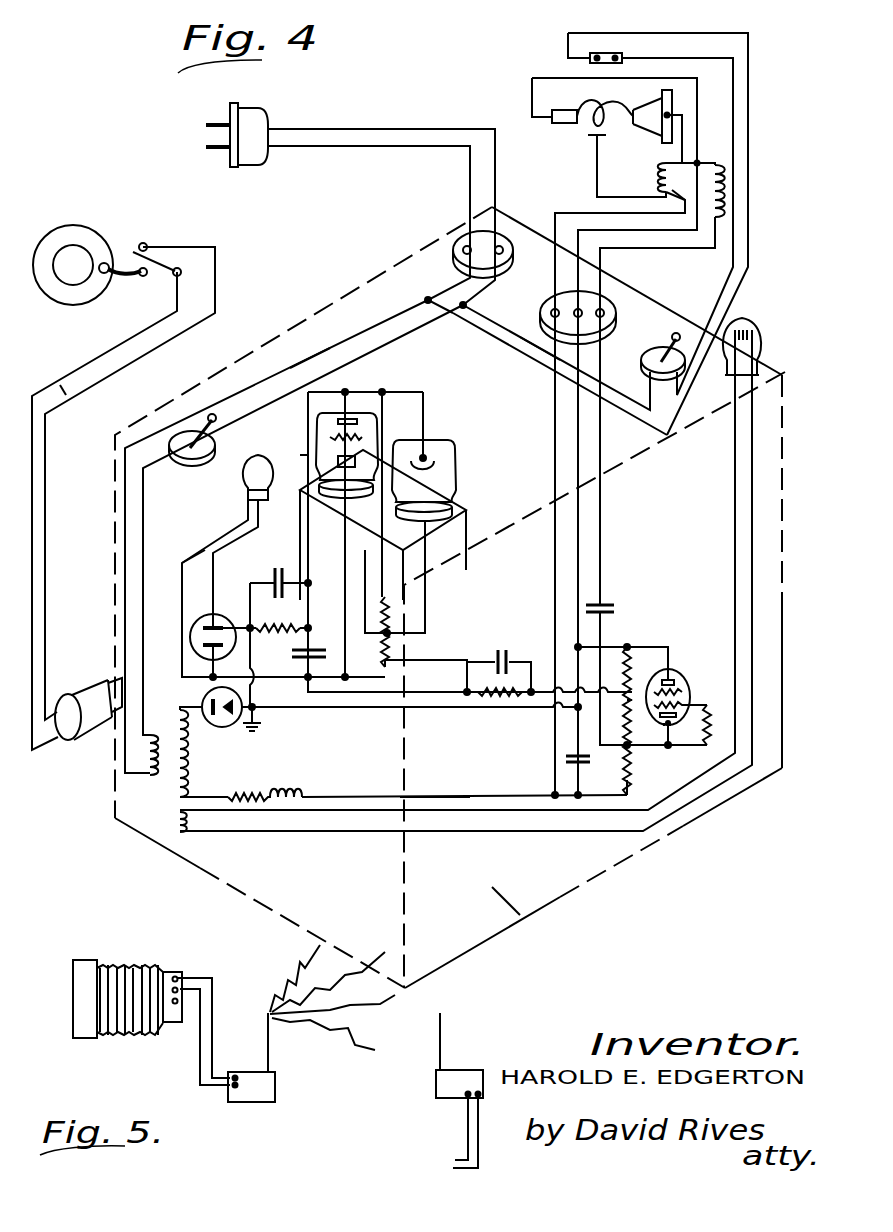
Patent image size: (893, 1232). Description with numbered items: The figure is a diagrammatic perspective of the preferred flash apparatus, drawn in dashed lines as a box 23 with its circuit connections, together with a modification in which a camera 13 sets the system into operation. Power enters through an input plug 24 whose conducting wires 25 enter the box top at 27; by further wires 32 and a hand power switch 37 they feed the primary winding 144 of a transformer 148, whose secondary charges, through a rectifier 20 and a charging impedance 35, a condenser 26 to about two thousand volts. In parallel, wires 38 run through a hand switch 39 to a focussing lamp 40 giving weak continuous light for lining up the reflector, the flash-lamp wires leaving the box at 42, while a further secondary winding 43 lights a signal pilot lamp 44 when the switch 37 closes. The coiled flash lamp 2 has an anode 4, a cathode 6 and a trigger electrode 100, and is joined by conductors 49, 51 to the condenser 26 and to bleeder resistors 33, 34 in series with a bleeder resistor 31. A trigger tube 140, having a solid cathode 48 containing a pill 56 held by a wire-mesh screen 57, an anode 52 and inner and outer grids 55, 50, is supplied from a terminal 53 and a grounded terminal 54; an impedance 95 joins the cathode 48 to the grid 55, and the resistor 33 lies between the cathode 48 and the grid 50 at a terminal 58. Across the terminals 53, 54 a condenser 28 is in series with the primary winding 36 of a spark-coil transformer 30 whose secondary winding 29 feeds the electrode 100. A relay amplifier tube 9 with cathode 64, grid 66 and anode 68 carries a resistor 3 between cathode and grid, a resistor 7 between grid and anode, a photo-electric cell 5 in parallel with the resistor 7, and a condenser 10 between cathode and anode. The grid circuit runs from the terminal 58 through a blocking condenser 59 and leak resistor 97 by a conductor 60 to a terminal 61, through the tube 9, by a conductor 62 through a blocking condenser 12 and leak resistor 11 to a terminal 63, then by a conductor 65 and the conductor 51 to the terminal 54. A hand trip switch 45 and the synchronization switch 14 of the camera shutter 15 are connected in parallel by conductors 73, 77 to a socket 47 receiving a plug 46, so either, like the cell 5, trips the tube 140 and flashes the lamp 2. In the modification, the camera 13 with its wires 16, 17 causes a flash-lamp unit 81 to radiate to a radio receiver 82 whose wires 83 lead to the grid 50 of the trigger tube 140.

In FIG. 4, the focussing lamp 40 is at (606, 52).
In FIG. 4, the flash lamp 2 is at (612, 108).
In FIG. 4, the anode 4 is at (560, 124).
In FIG. 4, the trigger control electrode 100 is at (594, 140).
In FIG. 4, the cathode 6 is at (672, 102).
In FIG. 4, the secondary winding 29 is at (658, 178).
In FIG. 4, the transformer 30 is at (679, 196).
In FIG. 4, the primary winding 36 is at (724, 181).
In FIG. 4, the input plug 24 is at (252, 116).
In FIG. 4, the conducting wires 25 is at (381, 128).
In FIG. 4, the cable entry 27 is at (490, 248).
In FIG. 4, the camera shutter 15 is at (93, 244).
In FIG. 5, the camera shutter 15 is at (186, 1010).
In FIG. 4, the camera shutter synchronization switch 14 is at (162, 278).
In FIG. 5, the camera shutter synchronization switch 14 is at (182, 980).
In FIG. 4, the wires 32 is at (272, 383).
In FIG. 4, the conductors 77 is at (64, 392).
In FIG. 4, the hand power switch 37 is at (183, 438).
In FIG. 4, the flash-lamp cable outlet 42 is at (590, 300).
In FIG. 4, the hand switch 39 is at (661, 355).
In FIG. 4, the signal pilot lamp 44 is at (762, 336).
In FIG. 4, the wires 38 is at (530, 352).
In FIG. 4, the anode 68 is at (345, 392).
In FIG. 4, the relay amplifier tube 9 is at (356, 412).
In FIG. 4, the control electrode 66 is at (360, 437).
In FIG. 4, the cathode 64 is at (340, 460).
In FIG. 4, the photo-electric cell 5 is at (434, 457).
In FIG. 4, the trip switch 45 is at (258, 462).
In FIG. 4, the conductor 62 is at (300, 455).
In FIG. 4, the conductors 73 is at (215, 553).
In FIG. 4, the blocking condenser 12 is at (273, 576).
In FIG. 4, the socket 47 is at (209, 620).
In FIG. 4, the conductor 65 is at (244, 620).
In FIG. 4, the terminal 63 is at (258, 627).
In FIG. 4, the leak resistor 11 is at (278, 636).
In FIG. 4, the condenser 10 is at (316, 655).
In FIG. 4, the impedance 7 is at (395, 600).
In FIG. 4, the impedance 3 is at (440, 660).
In FIG. 4, the conductor 60 is at (442, 692).
In FIG. 4, the blocking condenser 59 is at (508, 657).
In FIG. 4, the leak resistor 97 is at (505, 702).
In FIG. 4, the conductor 51 is at (452, 708).
In FIG. 4, the terminal 61 is at (305, 684).
In FIG. 4, the condenser 28 is at (612, 605).
In FIG. 4, the bleeder resistor 34 is at (631, 660).
In FIG. 4, the bleeder resistor 33 is at (641, 737).
In FIG. 4, the grounded terminal 54 is at (630, 685).
In FIG. 4, the terminal 58 is at (632, 696).
In FIG. 4, the trigger tube 140 is at (690, 681).
In FIG. 4, the anode 52 is at (673, 676).
In FIG. 4, the outer grid 50 is at (686, 690).
In FIG. 4, the inner grid 55 is at (688, 706).
In FIG. 4, the cathode 48 is at (678, 722).
In FIG. 4, the impedance 95 is at (745, 726).
In FIG. 4, the condenser 26 is at (590, 762).
In FIG. 4, the terminal 53 is at (592, 757).
In FIG. 4, the bleeder resistor 31 is at (633, 781).
In FIG. 4, the pill 56 is at (670, 725).
In FIG. 4, the wire-mesh screen 57 is at (664, 724).
In FIG. 4, the plug 46 is at (78, 694).
In FIG. 4, the transformer 148 is at (158, 726).
In FIG. 4, the rectifier 20 is at (228, 727).
In FIG. 4, the primary winding 144 is at (173, 790).
In FIG. 4, the charging impedance 35 is at (284, 779).
In FIG. 4, the conductor 49 is at (435, 797).
In FIG. 4, the secondary winding 43 is at (178, 834).
In FIG. 4, the box 23 is at (520, 915).
In FIG. 5, the camera 13 is at (80, 1025).
In FIG. 5, the wire 17 is at (215, 1018).
In FIG. 5, the wire 16 is at (200, 1060).
In FIG. 5, the flash-lamp unit 81 is at (268, 1100).
In FIG. 5, the radio receiver 82 is at (466, 1075).
In FIG. 5, the wires 83 is at (466, 1127).